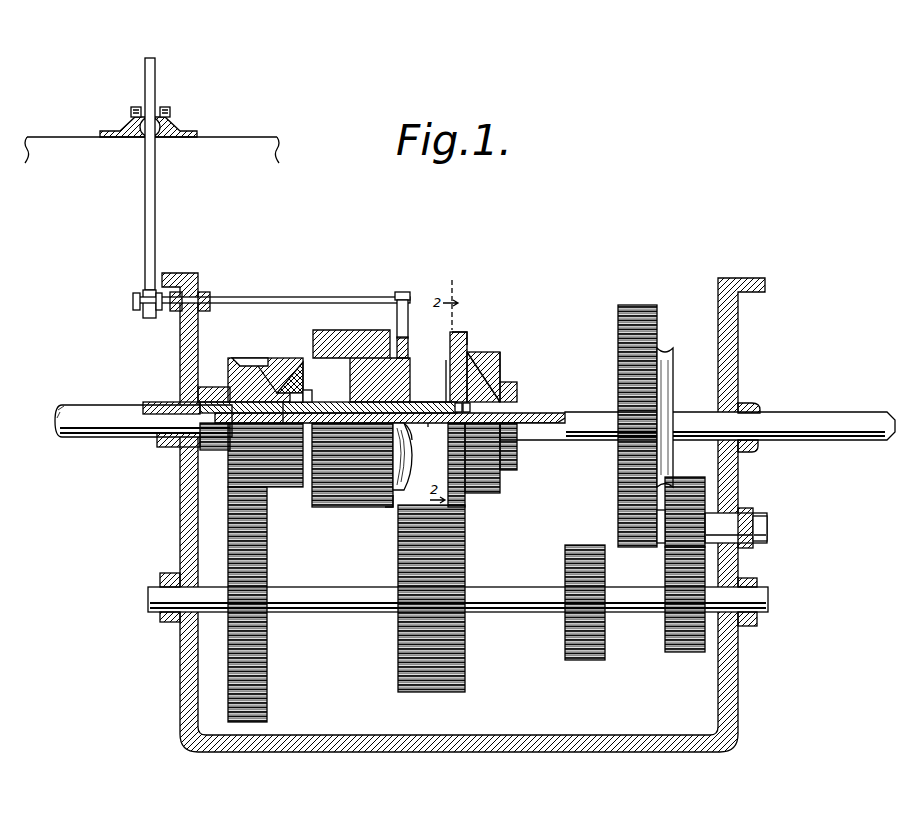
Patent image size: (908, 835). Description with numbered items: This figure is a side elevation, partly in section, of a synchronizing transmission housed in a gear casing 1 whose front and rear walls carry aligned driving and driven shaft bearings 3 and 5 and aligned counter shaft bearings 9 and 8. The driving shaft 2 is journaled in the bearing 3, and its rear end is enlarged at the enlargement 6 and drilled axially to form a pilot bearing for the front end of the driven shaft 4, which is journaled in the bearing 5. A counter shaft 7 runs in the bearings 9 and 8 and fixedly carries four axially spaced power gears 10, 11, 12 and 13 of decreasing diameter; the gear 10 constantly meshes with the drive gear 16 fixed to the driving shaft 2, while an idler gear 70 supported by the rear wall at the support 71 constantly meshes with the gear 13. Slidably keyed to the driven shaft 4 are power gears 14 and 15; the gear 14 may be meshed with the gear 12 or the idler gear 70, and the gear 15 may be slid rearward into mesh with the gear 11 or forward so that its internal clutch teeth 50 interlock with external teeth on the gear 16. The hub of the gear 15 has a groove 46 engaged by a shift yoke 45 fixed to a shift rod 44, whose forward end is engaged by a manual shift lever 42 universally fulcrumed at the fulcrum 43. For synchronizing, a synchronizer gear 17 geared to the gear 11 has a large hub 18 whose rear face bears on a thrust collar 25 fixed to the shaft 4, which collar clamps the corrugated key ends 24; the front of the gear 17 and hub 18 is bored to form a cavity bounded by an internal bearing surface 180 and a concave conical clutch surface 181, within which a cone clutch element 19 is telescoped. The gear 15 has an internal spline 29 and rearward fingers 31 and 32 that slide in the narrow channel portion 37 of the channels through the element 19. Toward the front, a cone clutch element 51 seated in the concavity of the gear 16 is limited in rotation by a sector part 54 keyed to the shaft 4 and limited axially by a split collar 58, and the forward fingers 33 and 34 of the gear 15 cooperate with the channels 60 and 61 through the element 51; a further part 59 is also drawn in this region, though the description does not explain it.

The gear casing 1 is at (178, 330).
The driving shaft 2 is at (97, 422).
The driving shaft bearing 3 is at (160, 402).
The driven shaft 4 is at (817, 415).
The driven shaft bearing 5 is at (752, 404).
The enlargement of driving shaft 6 is at (210, 387).
The counter shaft 7 is at (762, 598).
The counter shaft bearing 8 is at (752, 626).
The counter shaft bearing 9 is at (166, 623).
The counter shaft power gear 10 is at (248, 667).
The counter shaft power gear 11 is at (445, 656).
The counter shaft power gear 12 is at (590, 642).
The counter shaft power gear 13 is at (686, 655).
The slidable power gear 14 is at (654, 306).
The slidable power gear 15 is at (352, 330).
The drive gear 16 is at (254, 358).
The synchronizer gear 17 is at (464, 505).
The hub of synchronizer gear 18 is at (486, 352).
The cone clutch element 19 is at (450, 372).
The corrugated key ends 24 is at (532, 412).
The thrust collar 25 is at (516, 382).
The internal spline 29 is at (430, 427).
The finger 31 is at (428, 402).
The finger 32 is at (413, 440).
The finger 33 is at (329, 402).
The finger 34 is at (306, 455).
The narrow channel portion 37 is at (461, 352).
The manual shift lever 42 is at (152, 74).
The universal fulcrum 43 is at (160, 127).
The shift rod 44 is at (338, 297).
The shift yoke 45 is at (410, 300).
The groove 46 is at (395, 508).
The internal clutch teeth 50 is at (320, 330).
The cone clutch element 51 is at (283, 366).
The sector part 54 is at (268, 380).
The split collar 58 is at (300, 393).
The gear hub 59 is at (281, 410).
The channel 60 is at (241, 358).
The channel 61 is at (221, 461).
The idler gear 70 is at (703, 478).
The idler gear support 71 is at (760, 513).
The internal bearing surface 180 is at (460, 330).
The concave conical friction clutch surface 181 is at (503, 352).